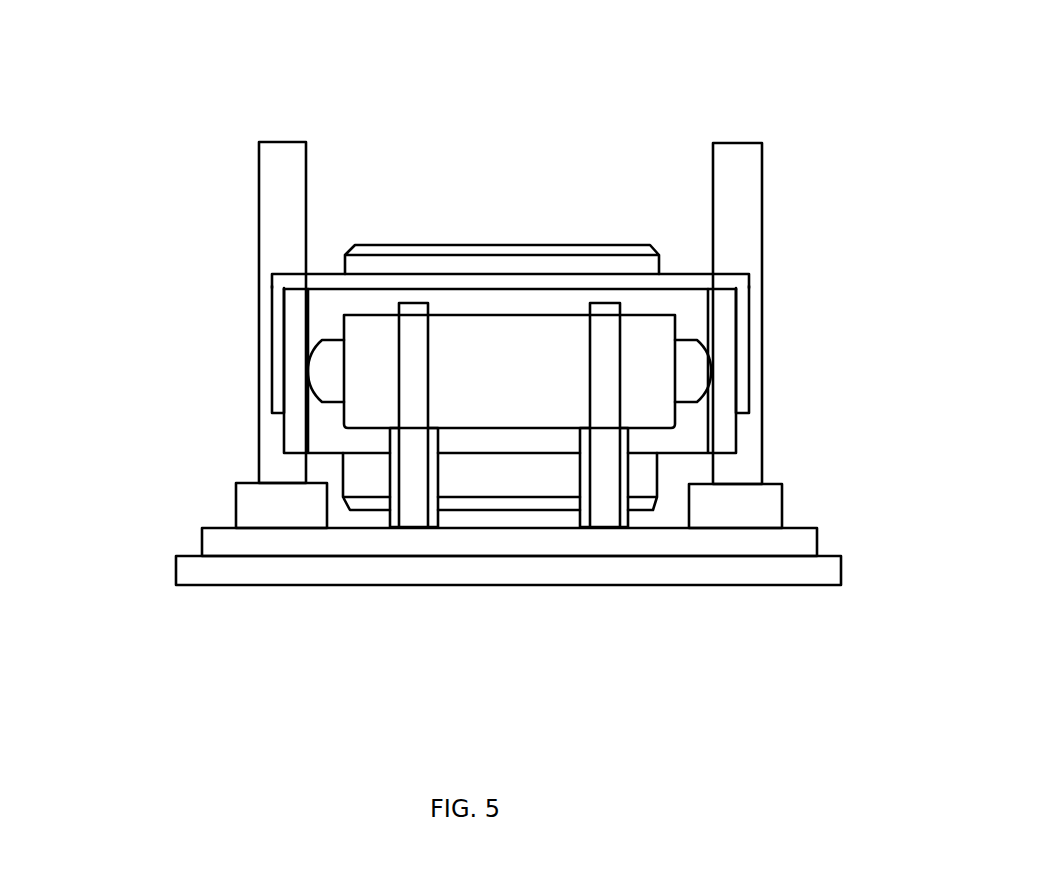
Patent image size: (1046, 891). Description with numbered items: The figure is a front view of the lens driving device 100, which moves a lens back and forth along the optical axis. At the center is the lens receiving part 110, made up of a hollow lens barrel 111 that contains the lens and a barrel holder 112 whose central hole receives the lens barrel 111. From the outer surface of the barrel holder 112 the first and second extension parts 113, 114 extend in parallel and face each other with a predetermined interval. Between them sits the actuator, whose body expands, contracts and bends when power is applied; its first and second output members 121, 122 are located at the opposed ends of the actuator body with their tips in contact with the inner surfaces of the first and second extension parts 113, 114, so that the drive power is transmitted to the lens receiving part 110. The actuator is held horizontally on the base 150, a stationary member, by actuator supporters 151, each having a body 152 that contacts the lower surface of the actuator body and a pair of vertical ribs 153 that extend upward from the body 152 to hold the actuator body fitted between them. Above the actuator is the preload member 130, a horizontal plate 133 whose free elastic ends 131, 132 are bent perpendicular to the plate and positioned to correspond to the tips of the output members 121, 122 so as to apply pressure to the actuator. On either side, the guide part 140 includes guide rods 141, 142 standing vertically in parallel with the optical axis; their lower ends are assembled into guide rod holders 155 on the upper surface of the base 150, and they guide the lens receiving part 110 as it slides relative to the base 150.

The lens driving device 100 is at (813, 90).
The lens receiving part 110 is at (475, 140).
The lens barrel 111 is at (393, 250).
The barrel holder 112 is at (463, 298).
The first extension part 113 is at (292, 440).
The second extension part 114 is at (722, 440).
The first output member 121 is at (327, 390).
The second output member 122 is at (698, 372).
The preload member 130 is at (185, 294).
The free elastic end 131 is at (278, 326).
The free elastic end 132 is at (747, 317).
The horizontal plate 133 is at (333, 279).
The guide part 140 is at (232, 160).
The guide rod 141 is at (272, 195).
The guide rod 142 is at (747, 218).
The base 150 is at (813, 542).
The actuator supporter 151 is at (333, 657).
The body 152 is at (432, 477).
The vertical rib 153 is at (409, 387).
The guide rod holder 155 is at (770, 501).